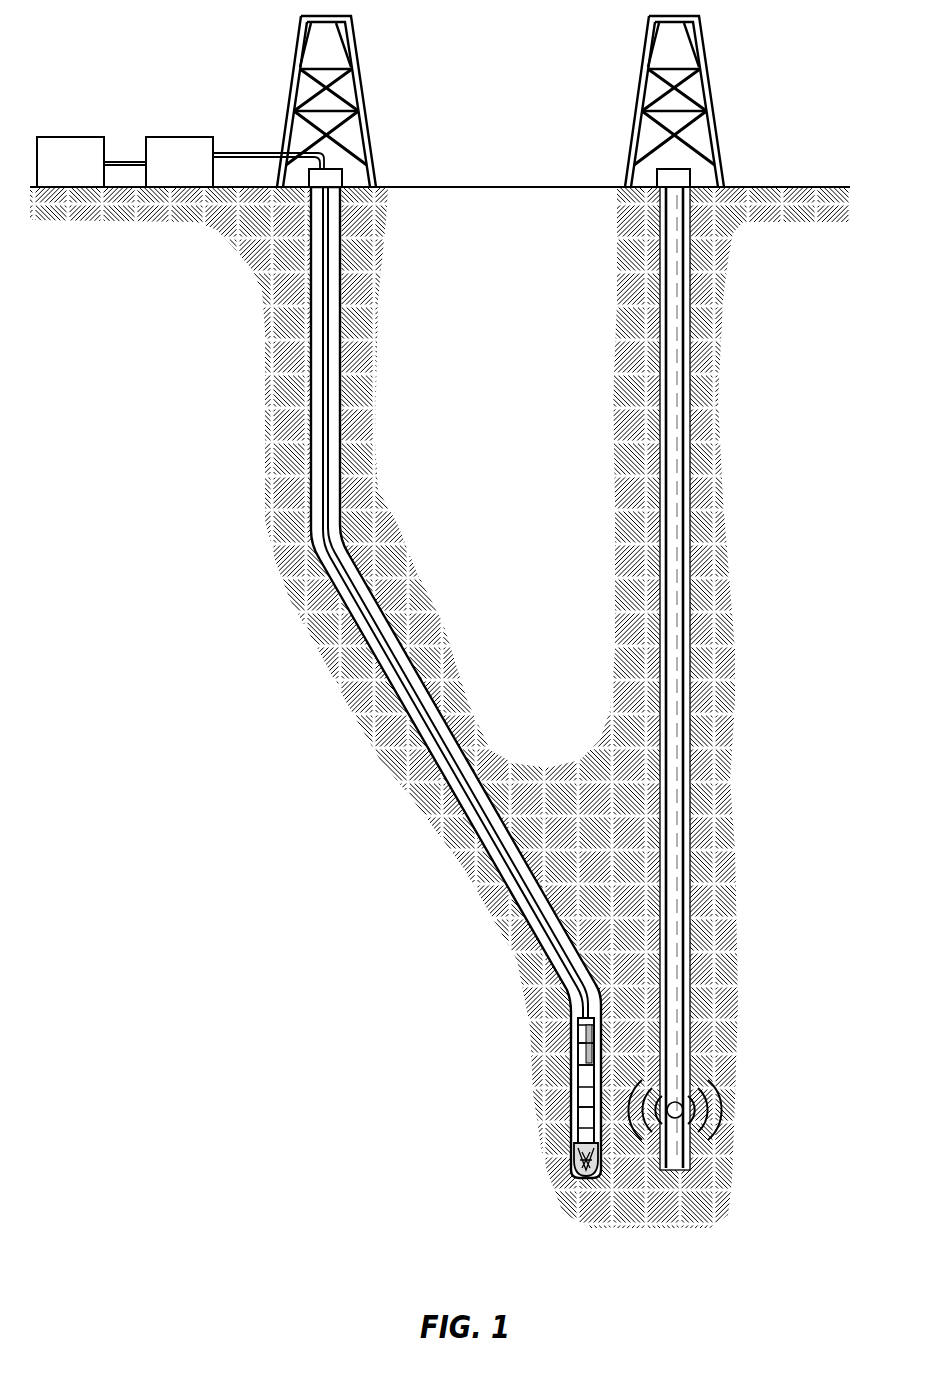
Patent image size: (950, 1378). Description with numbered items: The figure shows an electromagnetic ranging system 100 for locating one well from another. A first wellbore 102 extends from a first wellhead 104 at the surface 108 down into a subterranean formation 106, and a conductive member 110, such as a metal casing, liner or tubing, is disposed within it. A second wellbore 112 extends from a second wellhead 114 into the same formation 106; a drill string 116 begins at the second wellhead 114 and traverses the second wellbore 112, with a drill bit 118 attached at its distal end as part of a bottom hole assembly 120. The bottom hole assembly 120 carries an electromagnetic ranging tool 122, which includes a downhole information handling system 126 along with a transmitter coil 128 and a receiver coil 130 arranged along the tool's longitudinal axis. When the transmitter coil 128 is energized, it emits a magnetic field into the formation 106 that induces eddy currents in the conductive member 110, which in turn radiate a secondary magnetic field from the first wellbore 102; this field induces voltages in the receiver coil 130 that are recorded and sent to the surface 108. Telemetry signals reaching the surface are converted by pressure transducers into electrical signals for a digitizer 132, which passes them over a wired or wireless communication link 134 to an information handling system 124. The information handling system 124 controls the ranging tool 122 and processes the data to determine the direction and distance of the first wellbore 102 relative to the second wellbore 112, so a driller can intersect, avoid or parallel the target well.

The electromagnetic ranging system 100 is at (263, 748).
The first wellbore 102 is at (692, 344).
The first wellhead 104 is at (690, 178).
The subterranean formation 106 is at (620, 855).
The surface 108 is at (496, 187).
The conductive member 110 is at (683, 750).
The second wellbore 112 is at (310, 368).
The second wellhead 114 is at (345, 176).
The drill string 116 is at (378, 640).
The drill bit 118 is at (586, 1172).
The bottom hole assembly 120 is at (538, 1111).
The electromagnetic ranging tool 122 is at (580, 1055).
The information handling system 124 is at (92, 177).
The downhole information handling system 126 is at (580, 1025).
The transmitter coil 128 is at (583, 1113).
The receiver coil 130 is at (582, 1043).
The digitizer 132 is at (200, 177).
The communication link 134 is at (122, 162).